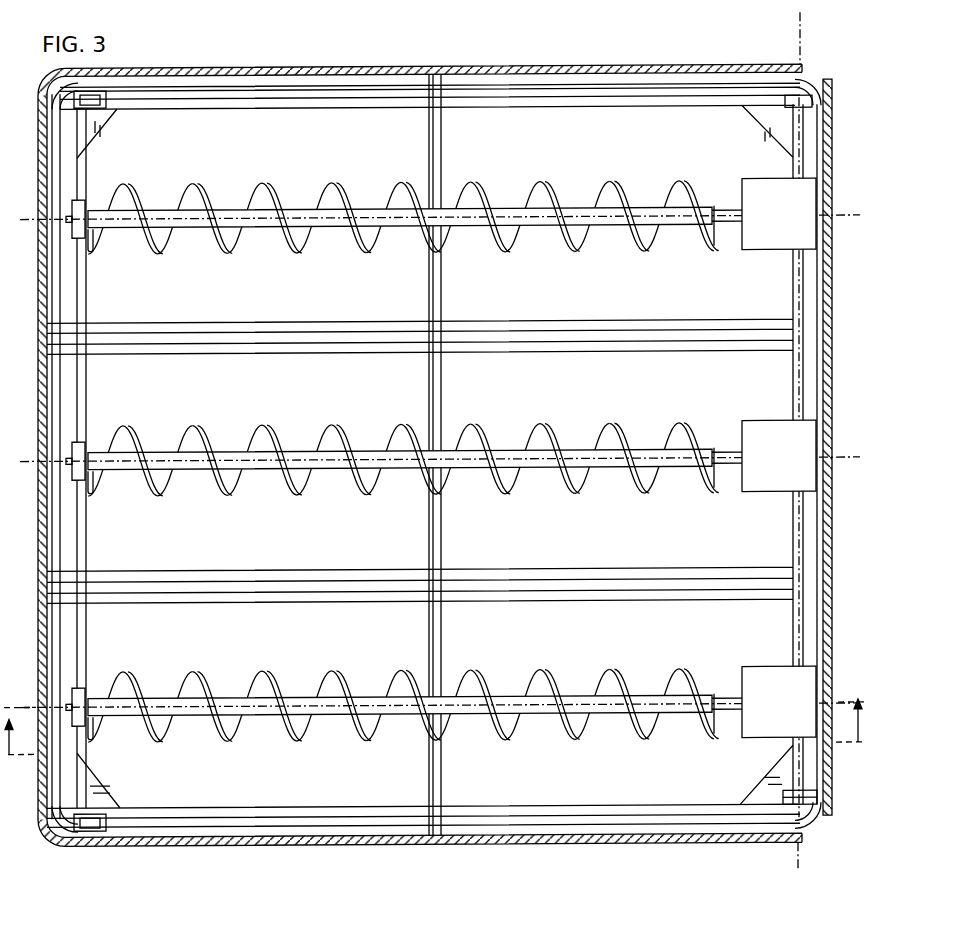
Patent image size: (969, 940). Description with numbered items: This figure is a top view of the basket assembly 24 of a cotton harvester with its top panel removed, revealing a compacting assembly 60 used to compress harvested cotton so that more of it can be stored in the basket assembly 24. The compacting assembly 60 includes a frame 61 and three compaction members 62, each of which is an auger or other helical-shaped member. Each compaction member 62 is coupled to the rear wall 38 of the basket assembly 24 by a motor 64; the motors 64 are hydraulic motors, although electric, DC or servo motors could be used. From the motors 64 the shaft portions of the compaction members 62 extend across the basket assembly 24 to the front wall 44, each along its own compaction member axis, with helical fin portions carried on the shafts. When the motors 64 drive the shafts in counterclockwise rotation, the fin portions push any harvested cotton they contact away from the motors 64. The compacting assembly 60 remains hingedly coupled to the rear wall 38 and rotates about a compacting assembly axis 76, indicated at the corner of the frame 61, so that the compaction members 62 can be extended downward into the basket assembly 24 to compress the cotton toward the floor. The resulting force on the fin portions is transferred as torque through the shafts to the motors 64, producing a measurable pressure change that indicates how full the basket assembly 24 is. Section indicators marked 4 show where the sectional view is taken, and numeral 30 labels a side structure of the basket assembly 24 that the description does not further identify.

The section line 4- 4 is at (434, 728).
The basket assembly 24 is at (439, 455).
The side wall 30 is at (837, 191).
The rear wall 38 is at (825, 432).
The front wall 44 is at (42, 388).
The compacting assembly 60 is at (822, 70).
The frame 61 is at (452, 100).
The compaction member 62 is at (440, 461).
The motor 64 is at (758, 243).
The compacting assembly axis 76 is at (824, 832).